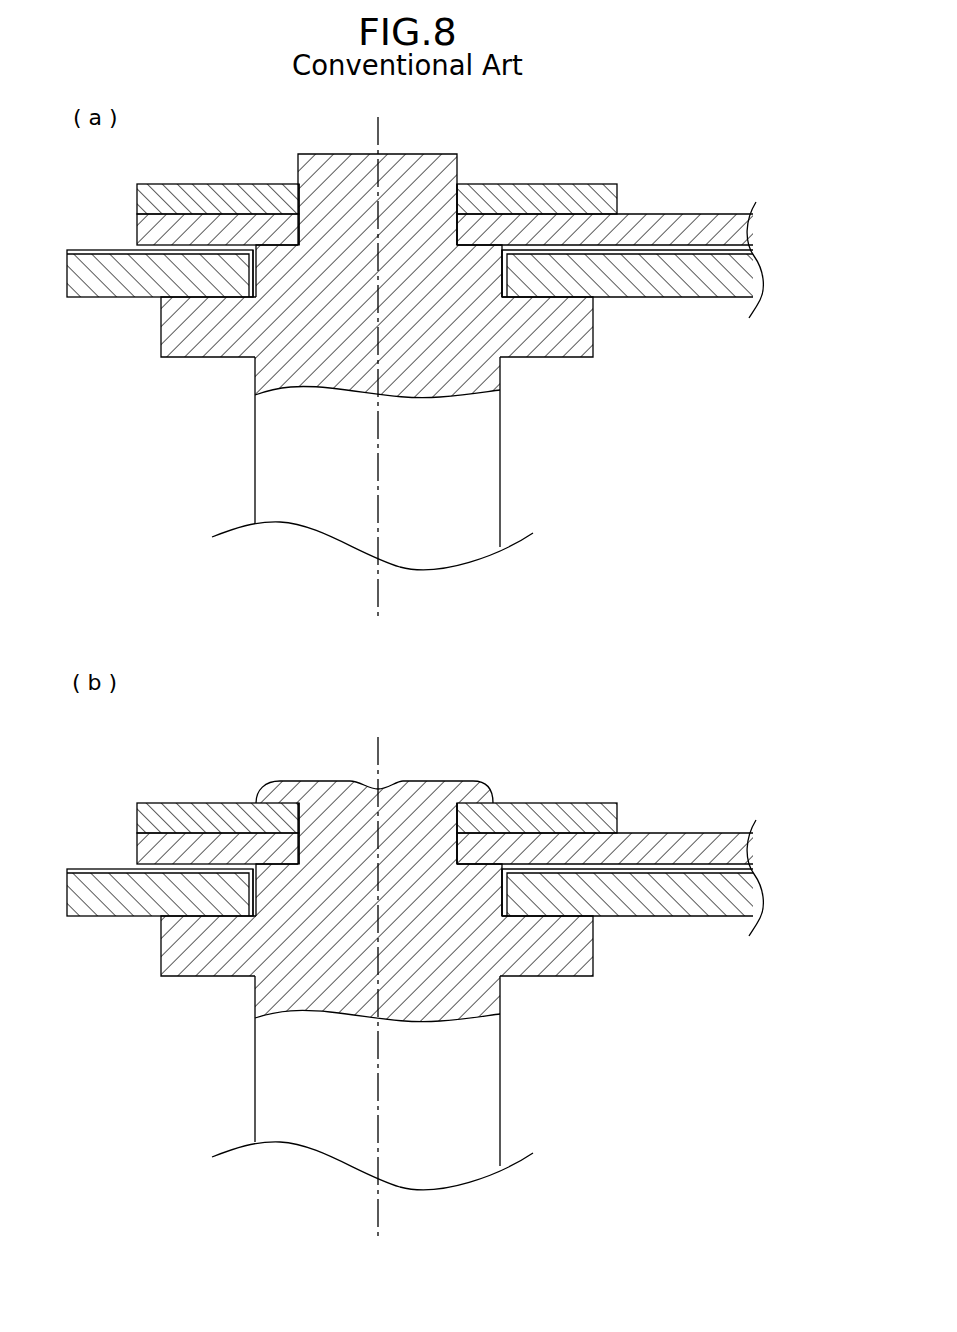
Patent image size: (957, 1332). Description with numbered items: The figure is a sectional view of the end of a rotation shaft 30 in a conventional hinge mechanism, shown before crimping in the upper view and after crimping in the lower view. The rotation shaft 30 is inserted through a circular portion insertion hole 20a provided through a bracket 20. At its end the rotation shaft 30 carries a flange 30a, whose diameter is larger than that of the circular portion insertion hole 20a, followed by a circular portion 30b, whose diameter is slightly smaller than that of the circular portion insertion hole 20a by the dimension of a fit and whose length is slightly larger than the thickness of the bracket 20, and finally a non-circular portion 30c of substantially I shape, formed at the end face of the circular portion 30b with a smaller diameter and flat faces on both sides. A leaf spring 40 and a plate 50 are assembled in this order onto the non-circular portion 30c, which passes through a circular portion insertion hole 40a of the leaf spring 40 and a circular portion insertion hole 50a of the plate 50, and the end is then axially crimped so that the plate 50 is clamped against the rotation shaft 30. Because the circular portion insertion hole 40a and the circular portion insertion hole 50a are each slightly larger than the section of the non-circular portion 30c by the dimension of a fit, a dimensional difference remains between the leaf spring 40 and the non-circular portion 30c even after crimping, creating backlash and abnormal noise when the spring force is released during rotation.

The bracket 20 is at (652, 283).
The circular portion insertion hole 20a is at (505, 272).
The rotation shaft 30 is at (502, 460).
The flange 30a is at (190, 348).
The circular portion 30b is at (283, 260).
The non-circular portion 30c is at (333, 168).
The leaf spring 40 is at (687, 223).
The circular portion insertion hole 40a is at (453, 232).
The plate 50 is at (563, 195).
The circular portion insertion hole 50a is at (297, 190).